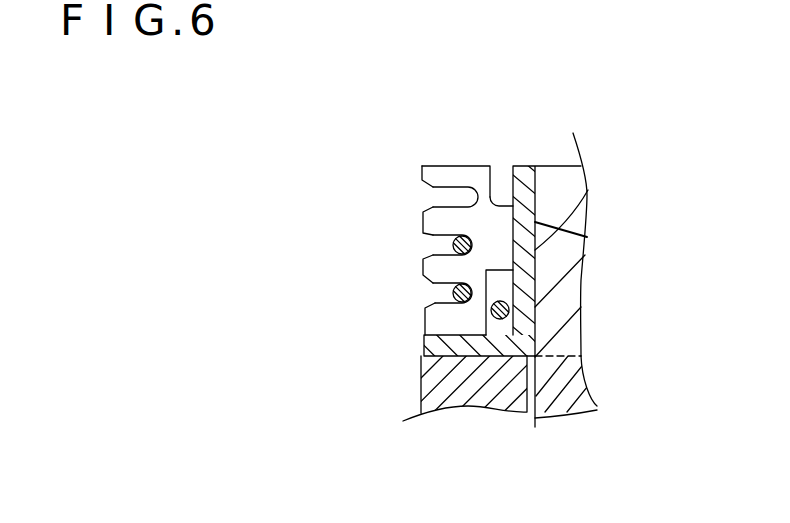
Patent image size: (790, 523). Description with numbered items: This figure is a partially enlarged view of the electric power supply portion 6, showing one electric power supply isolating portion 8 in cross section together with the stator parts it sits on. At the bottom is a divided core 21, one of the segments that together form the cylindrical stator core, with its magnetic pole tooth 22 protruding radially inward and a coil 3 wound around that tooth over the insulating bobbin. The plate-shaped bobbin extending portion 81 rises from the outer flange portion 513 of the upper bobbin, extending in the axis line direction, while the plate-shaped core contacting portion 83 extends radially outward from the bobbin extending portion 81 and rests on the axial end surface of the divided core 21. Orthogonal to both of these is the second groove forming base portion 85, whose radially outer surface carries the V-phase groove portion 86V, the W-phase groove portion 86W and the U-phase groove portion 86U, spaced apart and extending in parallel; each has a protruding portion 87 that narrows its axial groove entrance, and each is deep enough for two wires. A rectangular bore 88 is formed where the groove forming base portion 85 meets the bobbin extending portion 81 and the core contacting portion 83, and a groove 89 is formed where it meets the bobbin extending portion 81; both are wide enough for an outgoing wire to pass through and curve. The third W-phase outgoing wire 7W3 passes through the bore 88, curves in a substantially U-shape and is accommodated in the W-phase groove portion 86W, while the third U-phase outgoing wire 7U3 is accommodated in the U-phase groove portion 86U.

The electric power supply portion 6 is at (446, 120).
The electric power supply isolating portion 8 is at (439, 148).
The second groove forming base portion 85 is at (482, 182).
The groove 89 is at (500, 183).
The bobbin extending portion 81 is at (523, 178).
The protruding portion 87 is at (435, 180).
The V-phase groove portion 86V is at (430, 197).
The W-phase groove portion 86W is at (433, 237).
The U-phase groove portion 86U is at (430, 292).
The third W-phase outgoing wire 7W3 is at (452, 249).
The third U-phase outgoing wire 7U3 is at (453, 298).
The bore 88 is at (491, 296).
The core contacting portion 83 is at (440, 347).
The divided core 21 is at (440, 386).
The coil 3 is at (563, 297).
The magnetic pole tooth 22 is at (575, 390).
The outer flange portion 513 is at (532, 413).